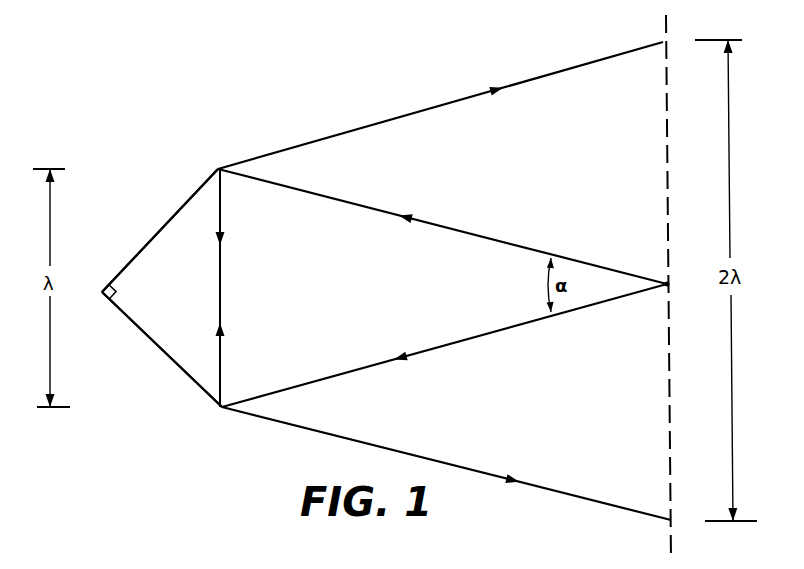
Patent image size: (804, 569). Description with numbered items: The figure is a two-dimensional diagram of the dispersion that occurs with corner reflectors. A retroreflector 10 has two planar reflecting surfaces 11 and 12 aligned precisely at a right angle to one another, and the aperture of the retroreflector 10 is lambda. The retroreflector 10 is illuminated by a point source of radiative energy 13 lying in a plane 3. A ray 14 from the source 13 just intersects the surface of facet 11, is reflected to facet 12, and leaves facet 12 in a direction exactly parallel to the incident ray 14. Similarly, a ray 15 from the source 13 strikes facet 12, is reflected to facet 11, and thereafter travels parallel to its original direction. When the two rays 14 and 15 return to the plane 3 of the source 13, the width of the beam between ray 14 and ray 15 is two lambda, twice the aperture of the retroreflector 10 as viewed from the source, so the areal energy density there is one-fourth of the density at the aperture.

The retroreflector 10 is at (146, 194).
The planar reflecting surface 11 is at (140, 249).
The planar reflecting surface 12 is at (176, 368).
The point source of radiative energy 13 is at (670, 281).
The ray 14 is at (472, 233).
The ray 15 is at (456, 100).
The plane 3 is at (668, 205).